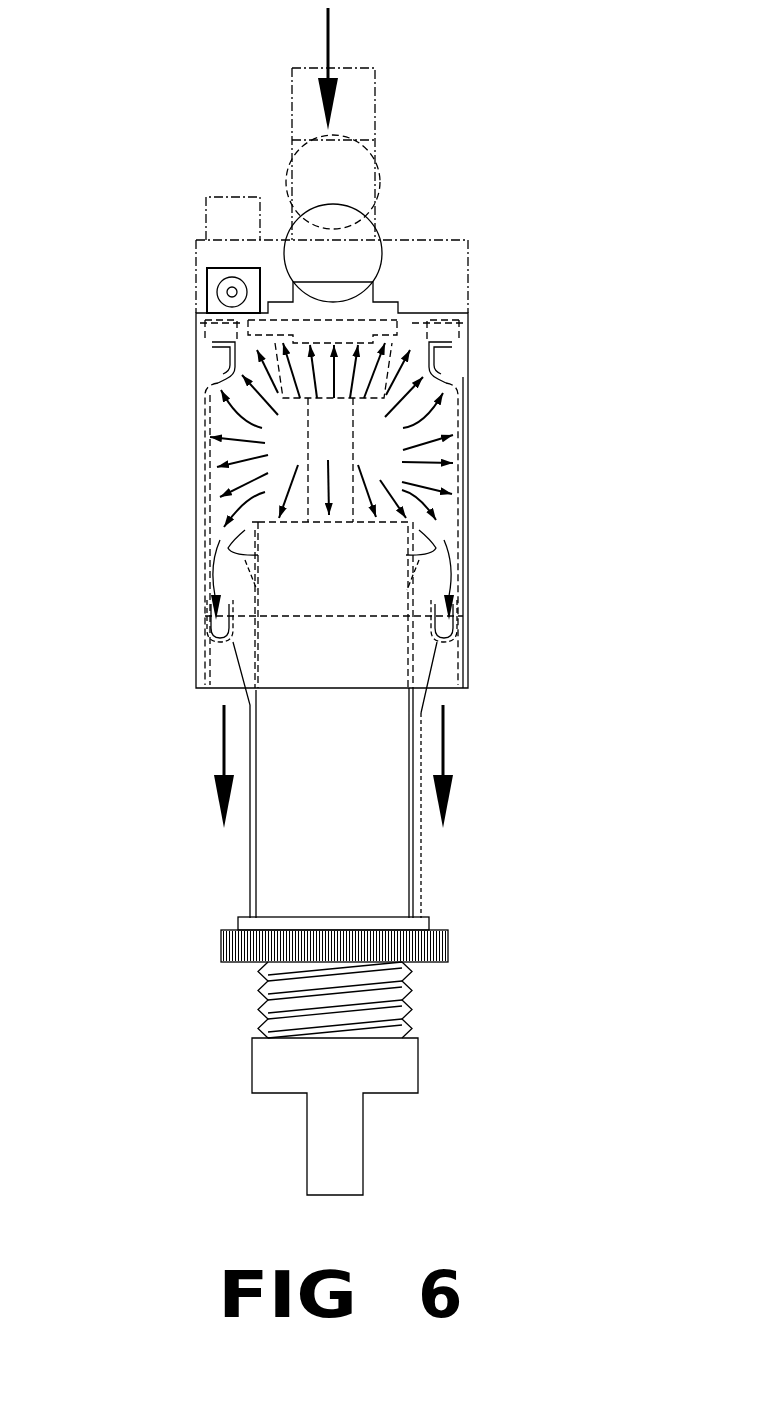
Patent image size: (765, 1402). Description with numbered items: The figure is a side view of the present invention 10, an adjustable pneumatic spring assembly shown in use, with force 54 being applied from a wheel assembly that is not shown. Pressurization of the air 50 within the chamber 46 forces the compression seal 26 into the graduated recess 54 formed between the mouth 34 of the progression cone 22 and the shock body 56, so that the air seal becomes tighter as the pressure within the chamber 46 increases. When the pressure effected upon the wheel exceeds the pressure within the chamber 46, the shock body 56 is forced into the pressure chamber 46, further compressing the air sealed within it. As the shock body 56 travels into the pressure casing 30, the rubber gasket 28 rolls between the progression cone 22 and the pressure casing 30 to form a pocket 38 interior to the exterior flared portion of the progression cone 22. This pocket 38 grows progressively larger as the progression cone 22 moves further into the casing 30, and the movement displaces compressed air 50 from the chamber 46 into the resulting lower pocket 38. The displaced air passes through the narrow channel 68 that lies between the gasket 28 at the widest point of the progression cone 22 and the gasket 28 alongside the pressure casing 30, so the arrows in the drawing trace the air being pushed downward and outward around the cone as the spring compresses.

The adjustable pneumatic spring assembly 10 is at (452, 197).
The progression cone 22 is at (463, 642).
The compression seal 26 is at (420, 548).
The rubber gasket 28 is at (272, 492).
The pressure casing 30 is at (468, 388).
The mouth of the progression cone 34 is at (447, 553).
The pocket 38 is at (448, 622).
The chamber 46 is at (247, 395).
The air 50 is at (427, 417).
The force 54 is at (328, 30).
The shock body 56 is at (268, 522).
The narrow channel 68 is at (443, 543).